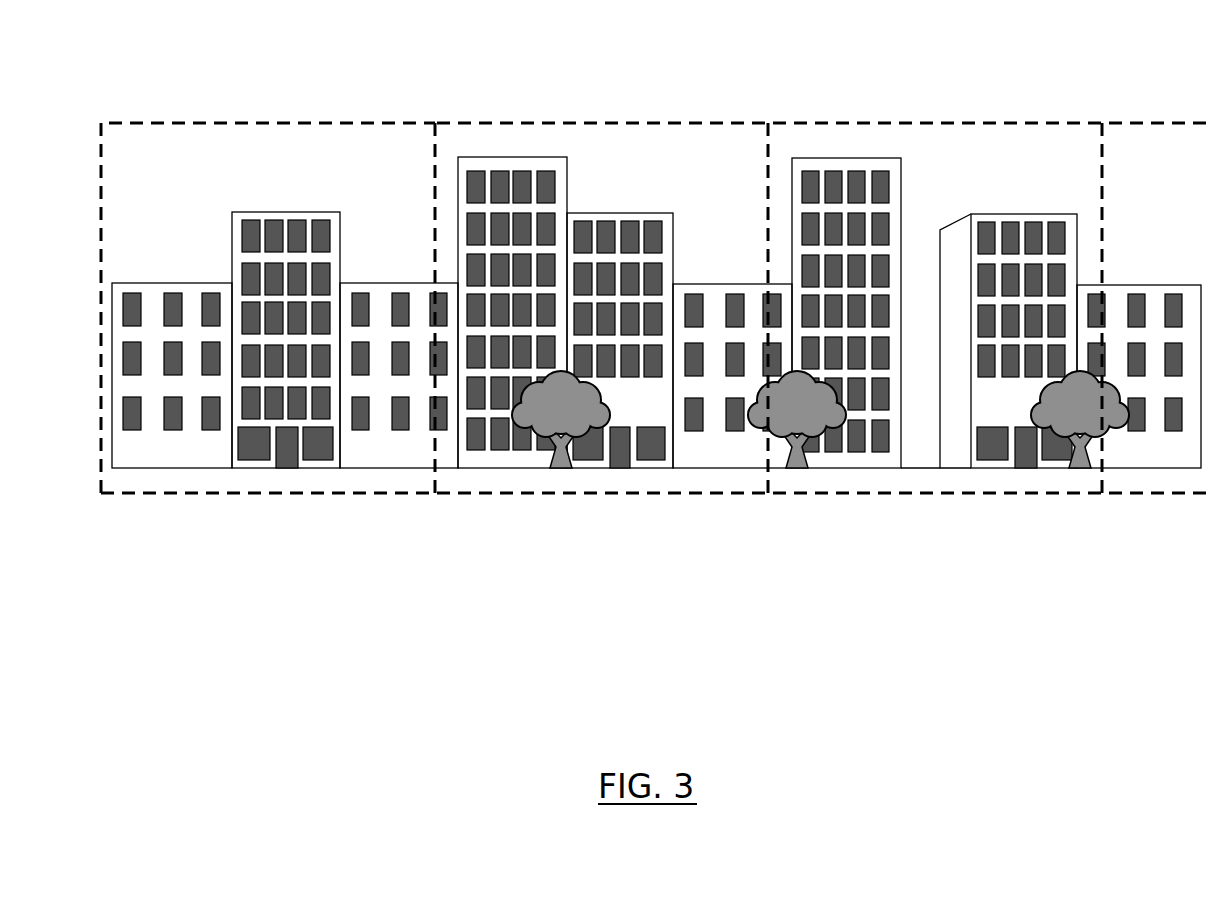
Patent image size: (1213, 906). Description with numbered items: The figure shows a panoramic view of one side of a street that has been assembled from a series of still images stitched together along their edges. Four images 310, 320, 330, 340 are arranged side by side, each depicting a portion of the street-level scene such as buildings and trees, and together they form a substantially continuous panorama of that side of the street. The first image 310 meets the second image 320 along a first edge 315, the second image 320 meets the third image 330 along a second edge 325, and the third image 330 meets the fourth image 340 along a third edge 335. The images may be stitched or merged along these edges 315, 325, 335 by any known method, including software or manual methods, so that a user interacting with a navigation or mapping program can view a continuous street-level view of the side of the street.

The image 310 is at (254, 122).
The edge 315 is at (435, 160).
The image 320 is at (592, 122).
The edge 325 is at (768, 160).
The image 330 is at (943, 122).
The edge 335 is at (1102, 160).
The image 340 is at (1140, 122).